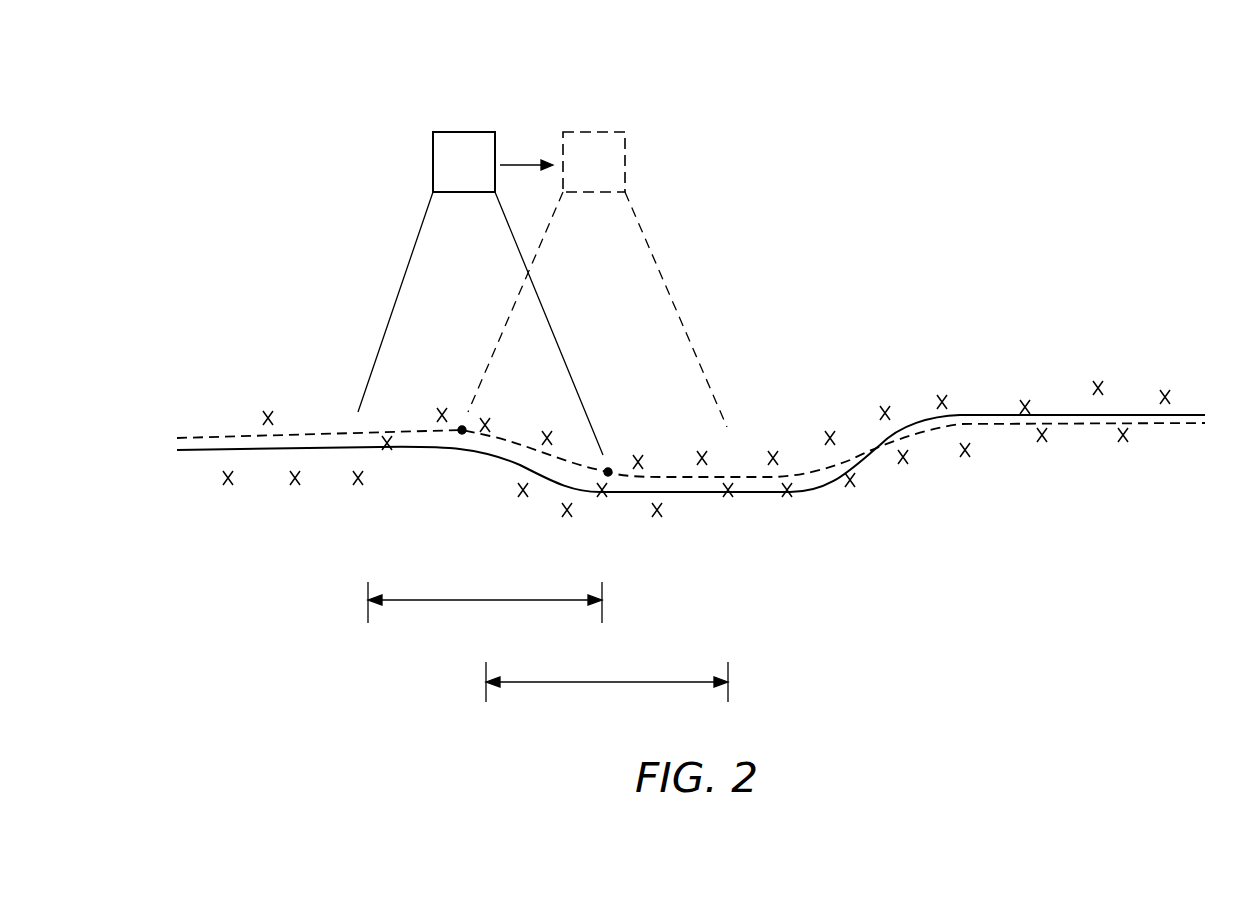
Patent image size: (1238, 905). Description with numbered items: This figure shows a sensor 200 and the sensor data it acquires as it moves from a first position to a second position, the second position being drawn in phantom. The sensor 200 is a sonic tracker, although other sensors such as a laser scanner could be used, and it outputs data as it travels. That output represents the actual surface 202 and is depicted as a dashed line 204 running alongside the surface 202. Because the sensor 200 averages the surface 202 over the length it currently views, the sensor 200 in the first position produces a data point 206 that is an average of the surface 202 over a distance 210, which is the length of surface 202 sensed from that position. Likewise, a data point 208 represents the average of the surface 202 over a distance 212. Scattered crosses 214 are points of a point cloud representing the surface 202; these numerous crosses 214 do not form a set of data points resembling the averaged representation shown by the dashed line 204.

The sensor 200 is at (462, 131).
The surface 202 is at (210, 451).
The dashed line 204 is at (197, 436).
The data point 206 is at (461, 425).
The data point 208 is at (610, 468).
The distance 210 is at (485, 595).
The distance 212 is at (607, 678).
The crosses 214 is at (945, 395).